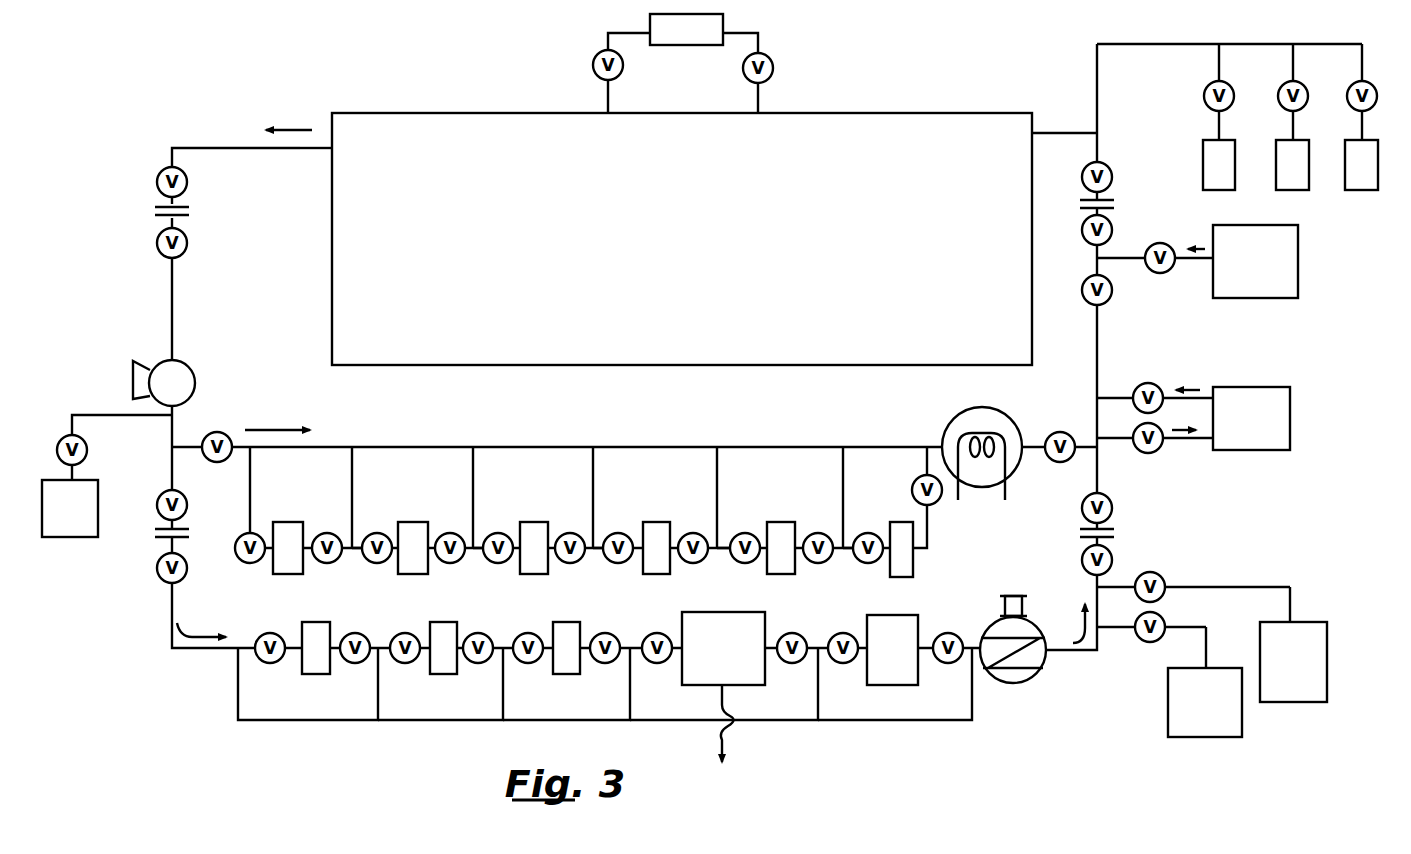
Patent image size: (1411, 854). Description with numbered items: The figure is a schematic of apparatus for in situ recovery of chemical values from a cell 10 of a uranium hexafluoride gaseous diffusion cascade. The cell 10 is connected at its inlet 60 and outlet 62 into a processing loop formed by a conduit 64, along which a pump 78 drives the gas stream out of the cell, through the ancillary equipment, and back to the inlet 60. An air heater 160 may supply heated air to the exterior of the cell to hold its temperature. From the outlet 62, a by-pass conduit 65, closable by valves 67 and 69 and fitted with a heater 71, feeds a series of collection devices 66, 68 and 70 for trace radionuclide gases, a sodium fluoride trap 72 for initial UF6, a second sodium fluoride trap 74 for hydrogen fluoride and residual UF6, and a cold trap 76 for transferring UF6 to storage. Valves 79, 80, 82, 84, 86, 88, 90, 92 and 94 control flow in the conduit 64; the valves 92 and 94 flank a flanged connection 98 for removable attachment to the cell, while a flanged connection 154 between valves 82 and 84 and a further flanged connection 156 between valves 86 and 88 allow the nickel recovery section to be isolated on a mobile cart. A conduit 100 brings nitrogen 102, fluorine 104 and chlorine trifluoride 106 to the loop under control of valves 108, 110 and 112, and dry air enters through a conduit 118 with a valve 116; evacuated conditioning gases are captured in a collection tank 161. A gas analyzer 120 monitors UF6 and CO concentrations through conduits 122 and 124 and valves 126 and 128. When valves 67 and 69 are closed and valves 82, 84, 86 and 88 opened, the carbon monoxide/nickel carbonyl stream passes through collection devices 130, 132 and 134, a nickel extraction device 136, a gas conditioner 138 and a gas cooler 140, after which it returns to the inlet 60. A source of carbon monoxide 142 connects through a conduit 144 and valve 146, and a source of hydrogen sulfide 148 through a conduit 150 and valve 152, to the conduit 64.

The cell 10 is at (462, 97).
The inlet 60 is at (1040, 132).
The outlet 62 is at (330, 146).
The conduit 64 is at (226, 147).
The by-pass conduit 65 is at (445, 446).
The collection device 66 is at (292, 522).
The valve 67 is at (220, 432).
The collection device 68 is at (412, 522).
The valve 69 is at (1060, 432).
The collection device 70 is at (535, 522).
The heater 71 is at (946, 425).
The sodium fluoride trap 72 is at (660, 522).
The second sodium fluoride trap 74 is at (787, 522).
The cold trap 76 is at (900, 522).
The pump 78 is at (160, 362).
The valve 79 is at (188, 180).
The valve 80 is at (188, 244).
The valve 82 is at (190, 503).
The valve 84 is at (188, 570).
The valve 86 is at (1080, 557).
The valve 88 is at (1080, 507).
The valve 90 is at (1113, 295).
The valve 92 is at (190, 210).
The valve 94 is at (1113, 180).
The flanged connection 98 is at (1118, 203).
The conduit 100 is at (1097, 62).
The source of nitrogen 102 is at (1228, 192).
The source of fluorine 104 is at (1298, 192).
The source of chlorine trifluoride 106 is at (1372, 194).
The valve 108 is at (1208, 88).
The valve 110 is at (1282, 104).
The valve 112 is at (1358, 88).
The valve 116 is at (1163, 272).
The conduit 118 is at (1200, 265).
The gas analyzer 120 is at (1265, 387).
The conduit 122 is at (1205, 395).
The conduit 124 is at (1202, 445).
The valve 126 is at (1145, 385).
The valve 128 is at (1160, 452).
The collection device 130 is at (315, 622).
The collection device 132 is at (440, 622).
The collection device 134 is at (560, 622).
The nickel extraction device 136 is at (695, 612).
The gas conditioner 138 is at (870, 615).
The gas cooler 140 is at (1000, 625).
The source of carbon monoxide gas 142 is at (1243, 715).
The conduit 144 is at (1205, 638).
The valve 146 is at (1165, 620).
The source of hydrogen sulfide gas 148 is at (1310, 620).
The conduit 150 is at (1250, 586).
The valve 152 is at (1160, 578).
The flanged connection 154 is at (150, 535).
The further flanged connection 156 is at (1112, 531).
The air heater 160 is at (705, 48).
The collection tank 161 is at (90, 450).